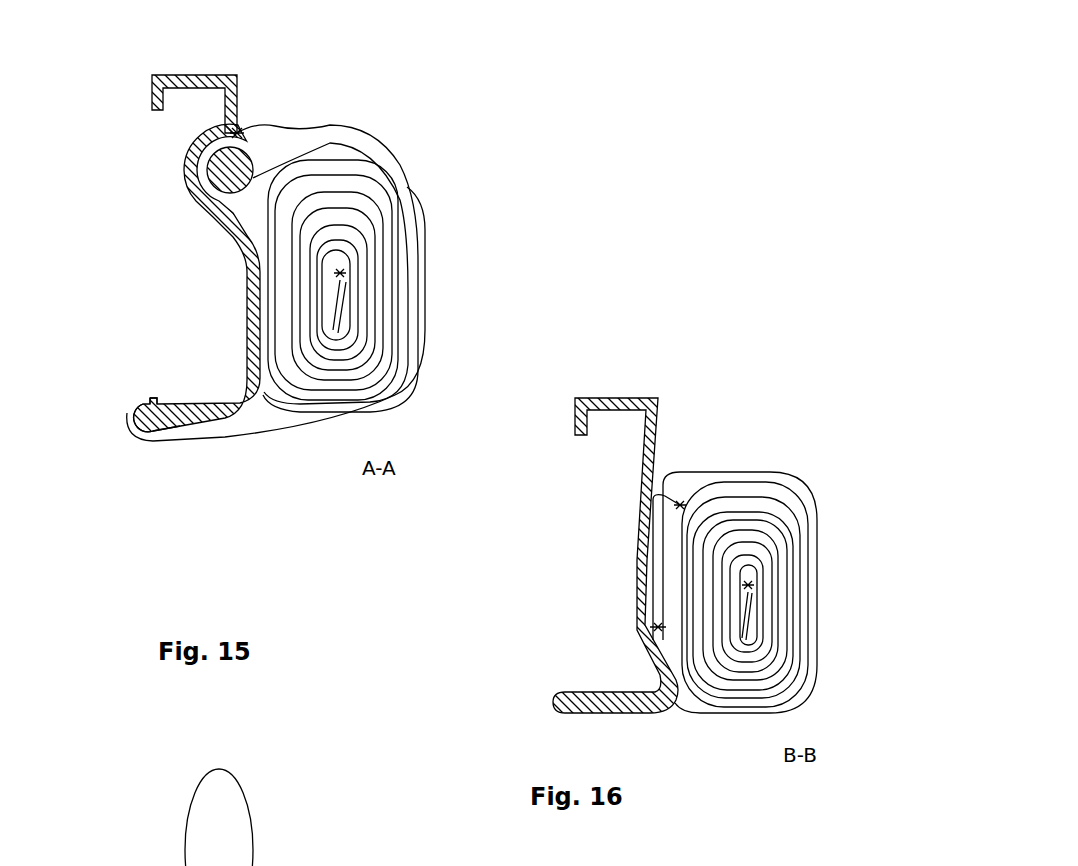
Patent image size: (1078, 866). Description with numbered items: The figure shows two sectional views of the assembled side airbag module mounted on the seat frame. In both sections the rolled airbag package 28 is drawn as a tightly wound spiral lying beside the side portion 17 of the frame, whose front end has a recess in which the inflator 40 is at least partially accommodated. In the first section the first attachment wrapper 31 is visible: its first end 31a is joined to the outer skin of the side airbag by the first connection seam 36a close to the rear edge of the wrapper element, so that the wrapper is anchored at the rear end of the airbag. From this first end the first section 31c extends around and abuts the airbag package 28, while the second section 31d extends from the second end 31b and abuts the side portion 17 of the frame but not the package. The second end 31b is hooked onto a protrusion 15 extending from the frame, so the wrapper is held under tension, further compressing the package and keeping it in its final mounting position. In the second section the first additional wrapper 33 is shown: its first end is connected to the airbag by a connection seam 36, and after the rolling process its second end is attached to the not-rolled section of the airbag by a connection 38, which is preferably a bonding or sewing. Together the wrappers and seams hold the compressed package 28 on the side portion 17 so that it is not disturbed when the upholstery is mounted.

In FIG. 15, the protrusion 15 is at (150, 400).
In FIG. 15, the side portion of the frame 17 is at (187, 82).
In FIG. 16, the side portion of the frame 17 is at (625, 400).
In FIG. 15, the airbag package 28 is at (362, 292).
In FIG. 16, the airbag package 28 is at (768, 614).
In FIG. 15, the first attachment wrapper 31 is at (407, 187).
In FIG. 15, the first end of the first attachment wrapper 31a is at (235, 133).
In FIG. 15, the second end of the first attachment wrapper 31b is at (165, 410).
In FIG. 15, the first section of the first attachment wrapper 31c is at (425, 287).
In FIG. 15, the second section of the first attachment wrapper 31d is at (235, 470).
In FIG. 16, the first additional wrapper 33 is at (742, 475).
In FIG. 16, the connection seam 36 is at (650, 627).
In FIG. 15, the first connection seam 36a is at (238, 133).
In FIG. 16, the connection 38 is at (680, 503).
In FIG. 15, the inflator 40 is at (222, 194).